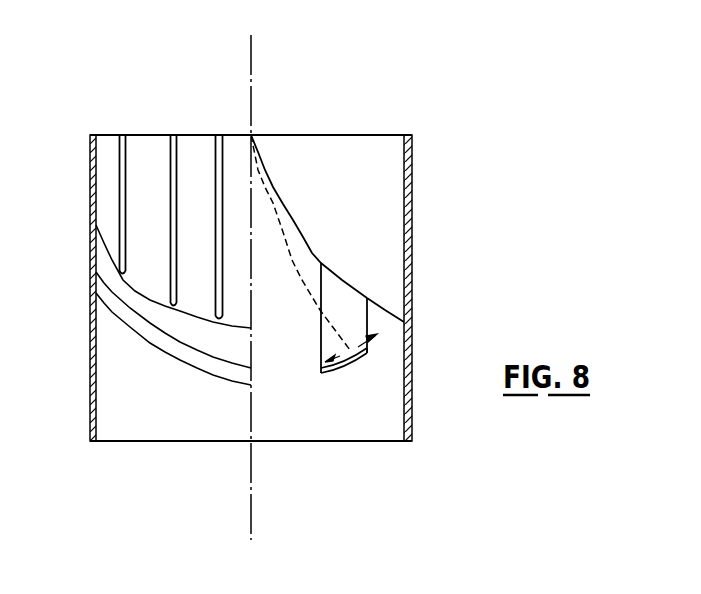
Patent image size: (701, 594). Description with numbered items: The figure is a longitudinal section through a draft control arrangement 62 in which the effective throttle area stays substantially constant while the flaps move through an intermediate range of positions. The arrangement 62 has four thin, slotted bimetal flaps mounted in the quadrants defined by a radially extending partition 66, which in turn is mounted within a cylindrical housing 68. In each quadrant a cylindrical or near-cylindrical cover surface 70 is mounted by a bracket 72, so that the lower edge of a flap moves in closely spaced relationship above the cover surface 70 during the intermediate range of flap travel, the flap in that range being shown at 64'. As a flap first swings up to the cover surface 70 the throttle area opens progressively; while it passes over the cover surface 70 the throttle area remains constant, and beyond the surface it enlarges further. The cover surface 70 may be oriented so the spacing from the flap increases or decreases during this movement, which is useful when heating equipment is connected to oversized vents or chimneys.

The draft control arrangement 62 is at (308, 262).
The flap in intermediate position 64' is at (300, 247).
The radially extending partition 66 is at (338, 135).
The cylindrical housing 68 is at (428, 220).
The cover surface 70 is at (394, 334).
The bracket 72 is at (368, 322).